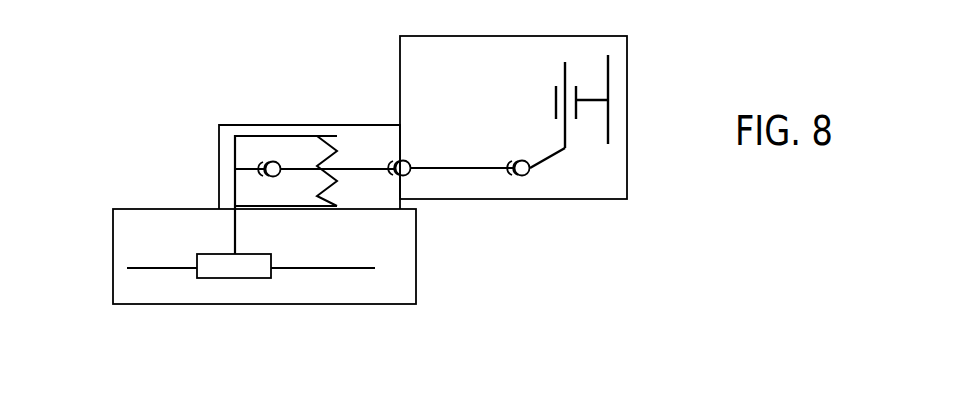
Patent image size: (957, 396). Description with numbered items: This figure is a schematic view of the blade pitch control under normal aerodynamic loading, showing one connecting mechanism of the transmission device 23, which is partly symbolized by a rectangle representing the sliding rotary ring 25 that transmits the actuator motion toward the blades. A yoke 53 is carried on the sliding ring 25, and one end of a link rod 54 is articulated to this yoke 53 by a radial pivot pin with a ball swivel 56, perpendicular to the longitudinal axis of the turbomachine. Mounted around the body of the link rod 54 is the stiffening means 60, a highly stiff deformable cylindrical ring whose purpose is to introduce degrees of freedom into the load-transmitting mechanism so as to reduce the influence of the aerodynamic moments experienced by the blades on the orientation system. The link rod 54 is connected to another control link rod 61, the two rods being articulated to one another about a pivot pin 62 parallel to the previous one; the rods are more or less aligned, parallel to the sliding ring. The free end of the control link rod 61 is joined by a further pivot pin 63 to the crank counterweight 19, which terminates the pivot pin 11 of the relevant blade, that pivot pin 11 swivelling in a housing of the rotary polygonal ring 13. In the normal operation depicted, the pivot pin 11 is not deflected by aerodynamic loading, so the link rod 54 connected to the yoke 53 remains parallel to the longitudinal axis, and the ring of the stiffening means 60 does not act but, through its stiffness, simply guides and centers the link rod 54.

The pivot pin 11 is at (565, 68).
The rotary polygonal ring housing 13 is at (609, 122).
The counterweight 19 is at (541, 166).
The transmission device 23 is at (176, 187).
The sliding rotary ring 25 is at (238, 278).
The yoke 53 is at (232, 158).
The link rod 54 is at (302, 168).
The pivot pin with ball swivel 56 is at (268, 162).
The stiffening means 60 is at (338, 150).
The control link rod 61 is at (457, 171).
The pivot pin 62 is at (400, 163).
The pivot pin 63 is at (522, 176).